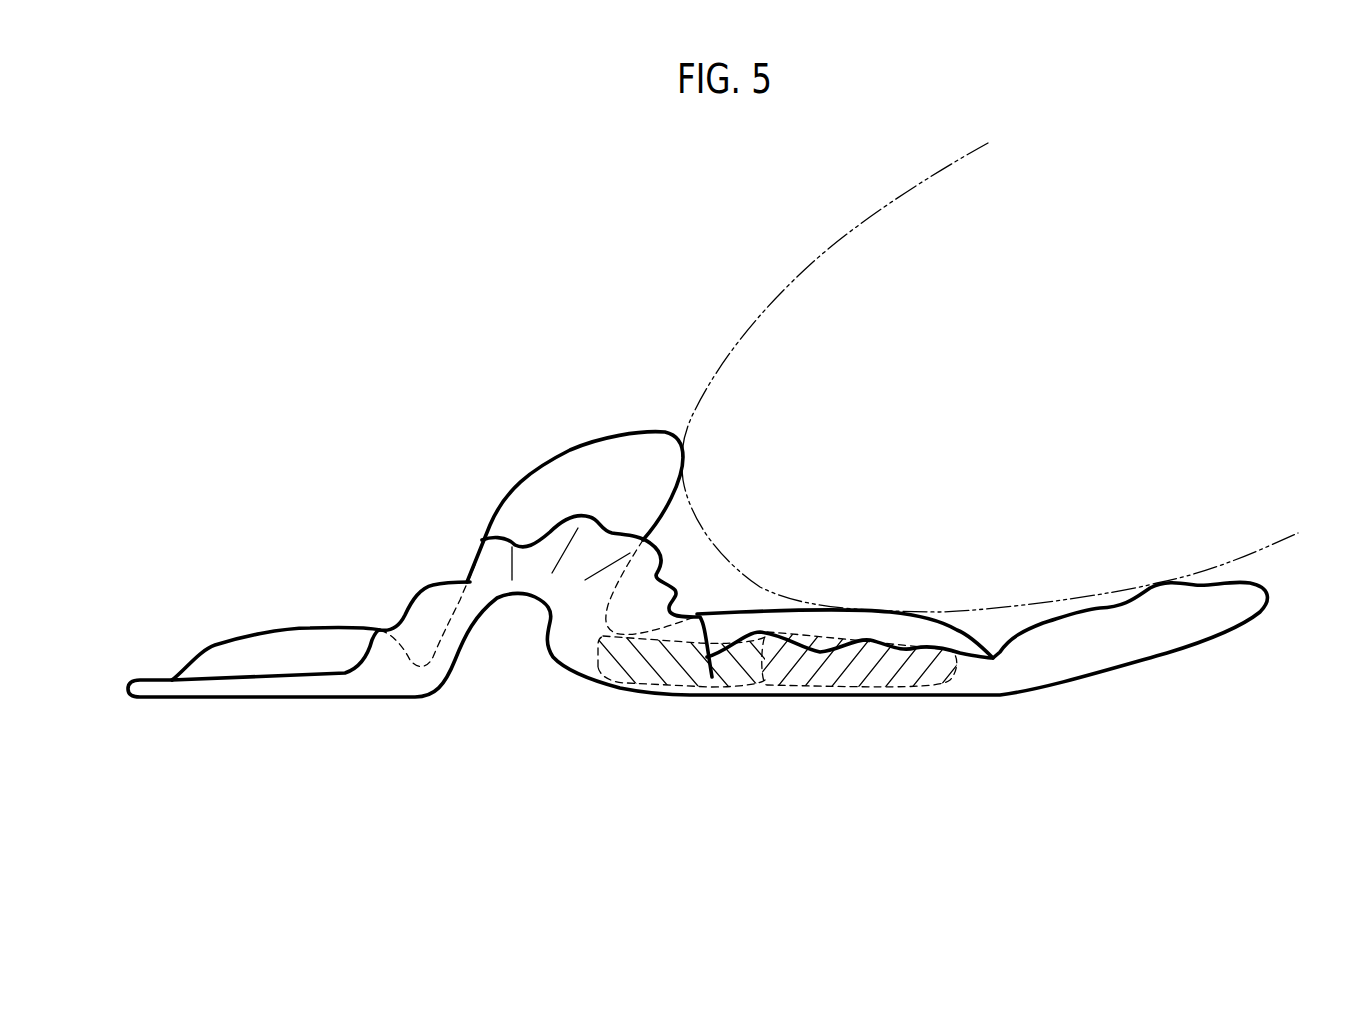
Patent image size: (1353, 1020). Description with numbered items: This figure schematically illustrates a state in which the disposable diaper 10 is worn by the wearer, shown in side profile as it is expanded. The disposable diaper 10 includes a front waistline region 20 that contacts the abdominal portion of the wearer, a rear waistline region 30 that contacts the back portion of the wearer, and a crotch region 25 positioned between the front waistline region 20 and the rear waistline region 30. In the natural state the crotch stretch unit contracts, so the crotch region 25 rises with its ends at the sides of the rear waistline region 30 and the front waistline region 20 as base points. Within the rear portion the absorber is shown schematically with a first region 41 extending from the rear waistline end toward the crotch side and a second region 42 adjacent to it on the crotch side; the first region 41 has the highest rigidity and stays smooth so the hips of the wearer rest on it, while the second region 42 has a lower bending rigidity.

The disposable diaper 10 is at (1113, 682).
The front waistline region 20 is at (225, 621).
The crotch region 25 is at (513, 487).
The rear waistline region 30 is at (954, 708).
The first region 41 is at (853, 658).
The second region 42 is at (633, 672).